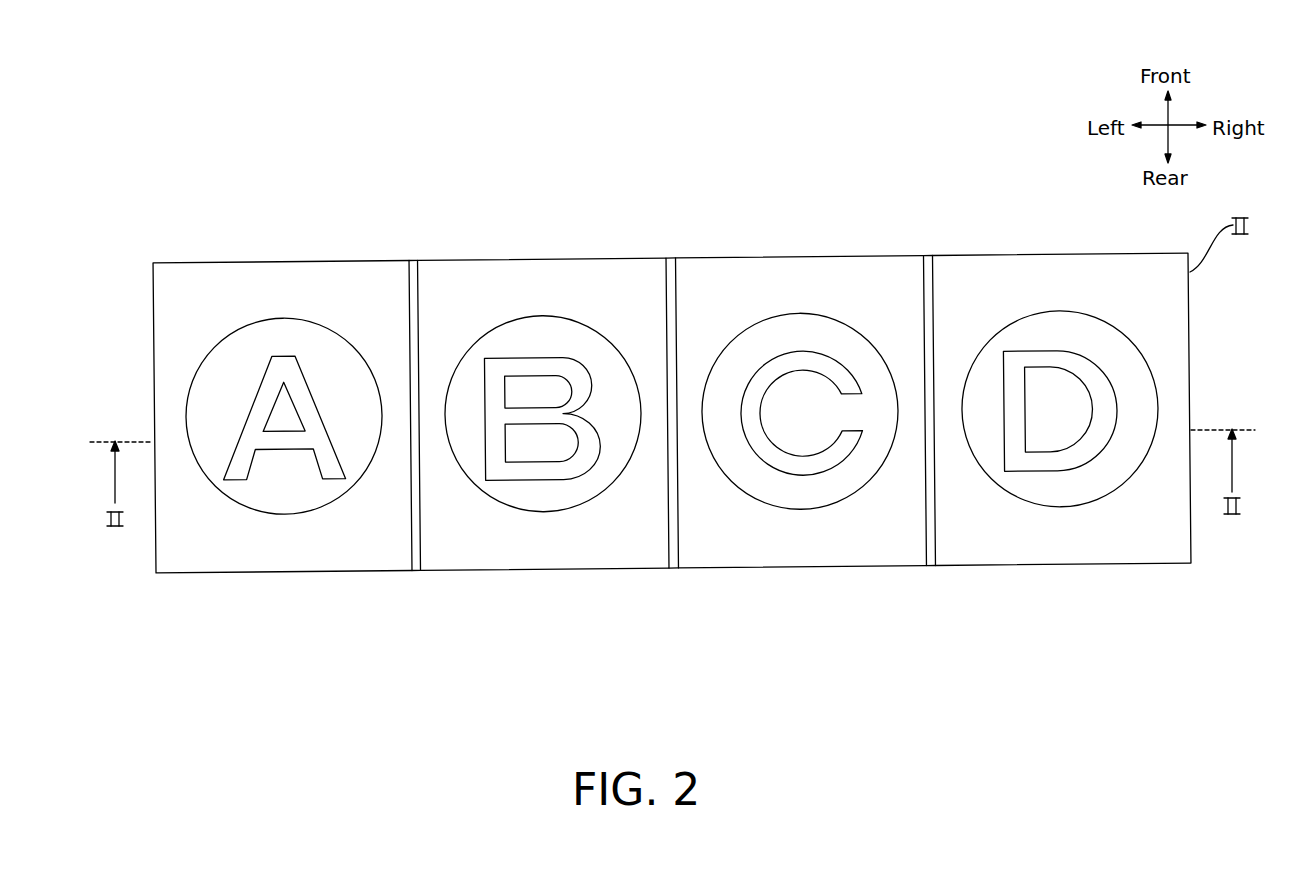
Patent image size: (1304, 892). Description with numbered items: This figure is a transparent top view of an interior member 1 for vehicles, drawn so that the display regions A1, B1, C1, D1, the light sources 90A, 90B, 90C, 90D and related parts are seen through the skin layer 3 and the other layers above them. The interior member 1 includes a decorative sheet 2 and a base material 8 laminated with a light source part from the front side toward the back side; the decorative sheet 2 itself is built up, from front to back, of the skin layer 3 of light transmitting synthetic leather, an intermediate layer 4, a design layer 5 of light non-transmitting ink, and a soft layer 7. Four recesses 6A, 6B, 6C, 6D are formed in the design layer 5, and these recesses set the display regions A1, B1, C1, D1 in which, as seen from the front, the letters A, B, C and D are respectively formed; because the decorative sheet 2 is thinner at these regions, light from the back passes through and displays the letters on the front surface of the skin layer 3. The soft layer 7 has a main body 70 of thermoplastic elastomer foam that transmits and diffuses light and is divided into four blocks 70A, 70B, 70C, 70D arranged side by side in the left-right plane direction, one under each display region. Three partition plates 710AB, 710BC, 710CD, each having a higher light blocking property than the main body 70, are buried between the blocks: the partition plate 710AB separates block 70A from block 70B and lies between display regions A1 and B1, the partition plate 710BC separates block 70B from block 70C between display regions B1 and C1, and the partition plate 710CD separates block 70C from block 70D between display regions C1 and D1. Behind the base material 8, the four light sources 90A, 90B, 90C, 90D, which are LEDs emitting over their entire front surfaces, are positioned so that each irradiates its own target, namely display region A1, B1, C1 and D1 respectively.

The interior member 1 is at (106, 116).
The decorative sheet 2 is at (131, 186).
The skin layer 3 is at (613, 428).
The intermediate layer 4 is at (613, 428).
The design layer 5 is at (613, 428).
The soft layer 7 is at (613, 428).
The base material 8 is at (197, 272).
The main body 70 is at (167, 310).
The block 70A is at (262, 558).
The block 70B is at (518, 557).
The block 70C is at (778, 557).
The block 70D is at (1035, 555).
The partition plate 710AB is at (414, 560).
The partition plate 710BC is at (673, 560).
The partition plate 710CD is at (930, 560).
The light source 90A is at (267, 320).
The light source 90B is at (524, 316).
The light source 90C is at (781, 313).
The light source 90D is at (1040, 311).
The display region A1 is at (284, 357).
The display region B1 is at (543, 357).
The display region C1 is at (802, 352).
The display region D1 is at (1060, 352).
The recess 6A is at (249, 417).
The recess 6B is at (490, 416).
The recess 6C is at (742, 396).
The recess 6D is at (1007, 409).